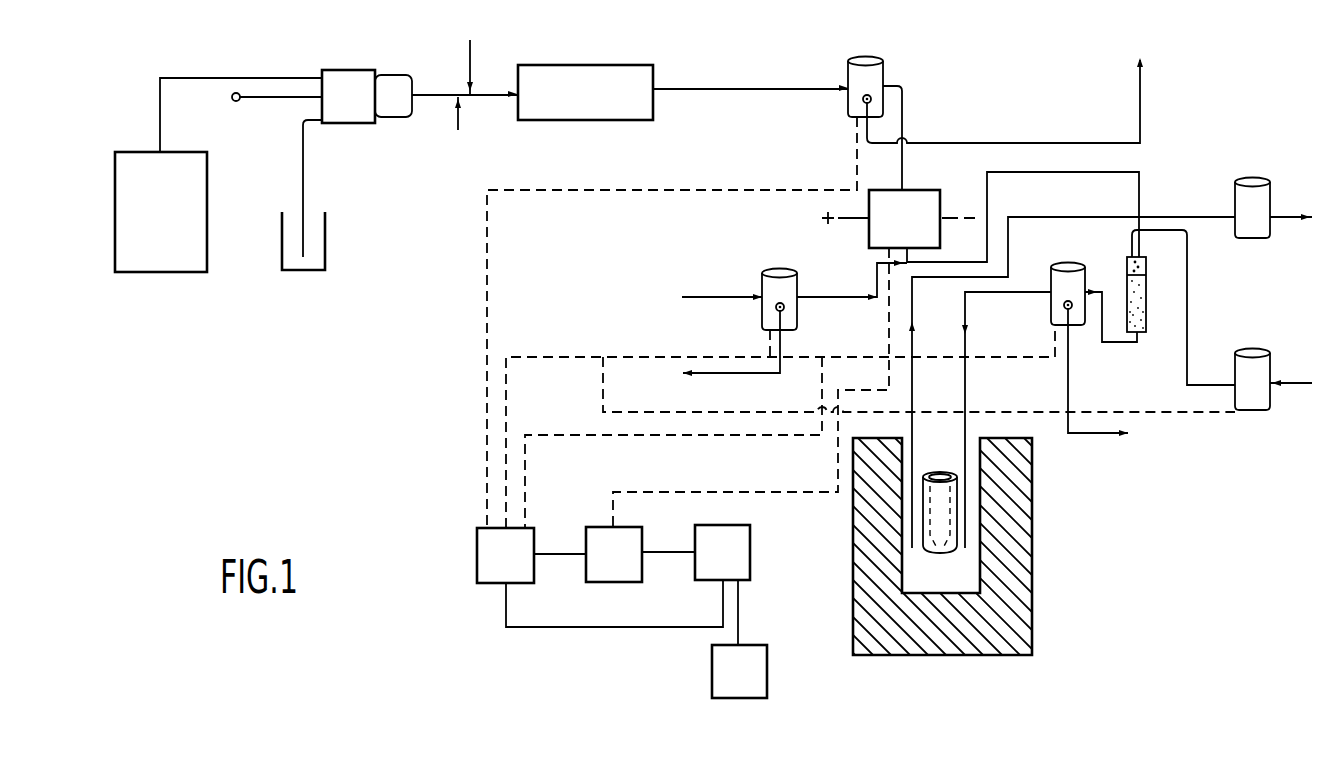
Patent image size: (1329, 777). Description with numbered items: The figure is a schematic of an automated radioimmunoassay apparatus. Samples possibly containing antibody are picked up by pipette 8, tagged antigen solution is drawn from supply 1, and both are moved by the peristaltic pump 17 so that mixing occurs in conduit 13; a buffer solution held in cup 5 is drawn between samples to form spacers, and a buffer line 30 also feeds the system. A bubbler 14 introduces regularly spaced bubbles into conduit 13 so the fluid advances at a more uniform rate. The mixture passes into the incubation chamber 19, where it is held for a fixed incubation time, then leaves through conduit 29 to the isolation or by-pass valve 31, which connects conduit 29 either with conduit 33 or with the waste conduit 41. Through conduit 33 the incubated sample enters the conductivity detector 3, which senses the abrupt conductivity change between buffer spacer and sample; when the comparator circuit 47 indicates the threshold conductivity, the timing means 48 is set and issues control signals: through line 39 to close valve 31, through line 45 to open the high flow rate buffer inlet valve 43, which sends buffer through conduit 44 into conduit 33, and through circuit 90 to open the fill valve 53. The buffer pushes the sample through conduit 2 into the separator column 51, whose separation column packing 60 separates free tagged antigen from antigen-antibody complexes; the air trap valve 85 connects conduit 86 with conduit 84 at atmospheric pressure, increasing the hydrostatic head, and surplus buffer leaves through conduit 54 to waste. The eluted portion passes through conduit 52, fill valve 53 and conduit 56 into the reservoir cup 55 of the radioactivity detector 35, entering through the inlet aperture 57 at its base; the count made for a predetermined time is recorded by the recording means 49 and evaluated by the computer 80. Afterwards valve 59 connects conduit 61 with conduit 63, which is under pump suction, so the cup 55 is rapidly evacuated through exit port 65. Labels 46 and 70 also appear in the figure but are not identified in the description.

The tagged antigen solution supply 1 is at (154, 224).
The cup 5 is at (327, 219).
The pipette 8 is at (233, 101).
The conduit 13 is at (432, 91).
The bubbler 14 is at (470, 40).
The peristaltic pump 17 is at (340, 109).
The incubation chamber 19 is at (575, 103).
The conduit 29 is at (722, 88).
The buffer line 30 is at (458, 113).
The isolation valve 31 is at (884, 66).
The conduit 33 is at (905, 88).
The waste conduit 41 is at (1012, 141).
The conduit 2 is at (1041, 175).
The conductivity detector 3 is at (897, 231).
The line 39 is at (485, 345).
The high flow rate buffer inlet valve 43 is at (798, 281).
The conduit 44 is at (834, 298).
The line 45 is at (586, 359).
The outlet conduit 46 is at (723, 375).
The comparator circuit 47 is at (606, 565).
The timing means 48 is at (497, 567).
The recording means 49 is at (714, 561).
The separator column 51 is at (1147, 293).
The conduit 52 is at (1101, 287).
The fill valve 53 is at (1061, 266).
The conduit 54 is at (1072, 346).
The reservoir cup 55 is at (940, 473).
The conduit 56 is at (1001, 294).
The inlet aperture 57 is at (960, 552).
The valve 59 is at (1237, 193).
The separation column 60 is at (1140, 316).
The conduit 61 is at (1105, 217).
The conduit 63 is at (1288, 218).
The exit port 65 is at (925, 548).
The filter 70 is at (1147, 265).
The computer 80 is at (731, 683).
The conduit 84 is at (1296, 390).
The air trap valve 85 is at (1265, 353).
The conduit 86 is at (1190, 346).
The circuit 90 is at (719, 490).
The radioactivity detector 35 is at (1034, 617).